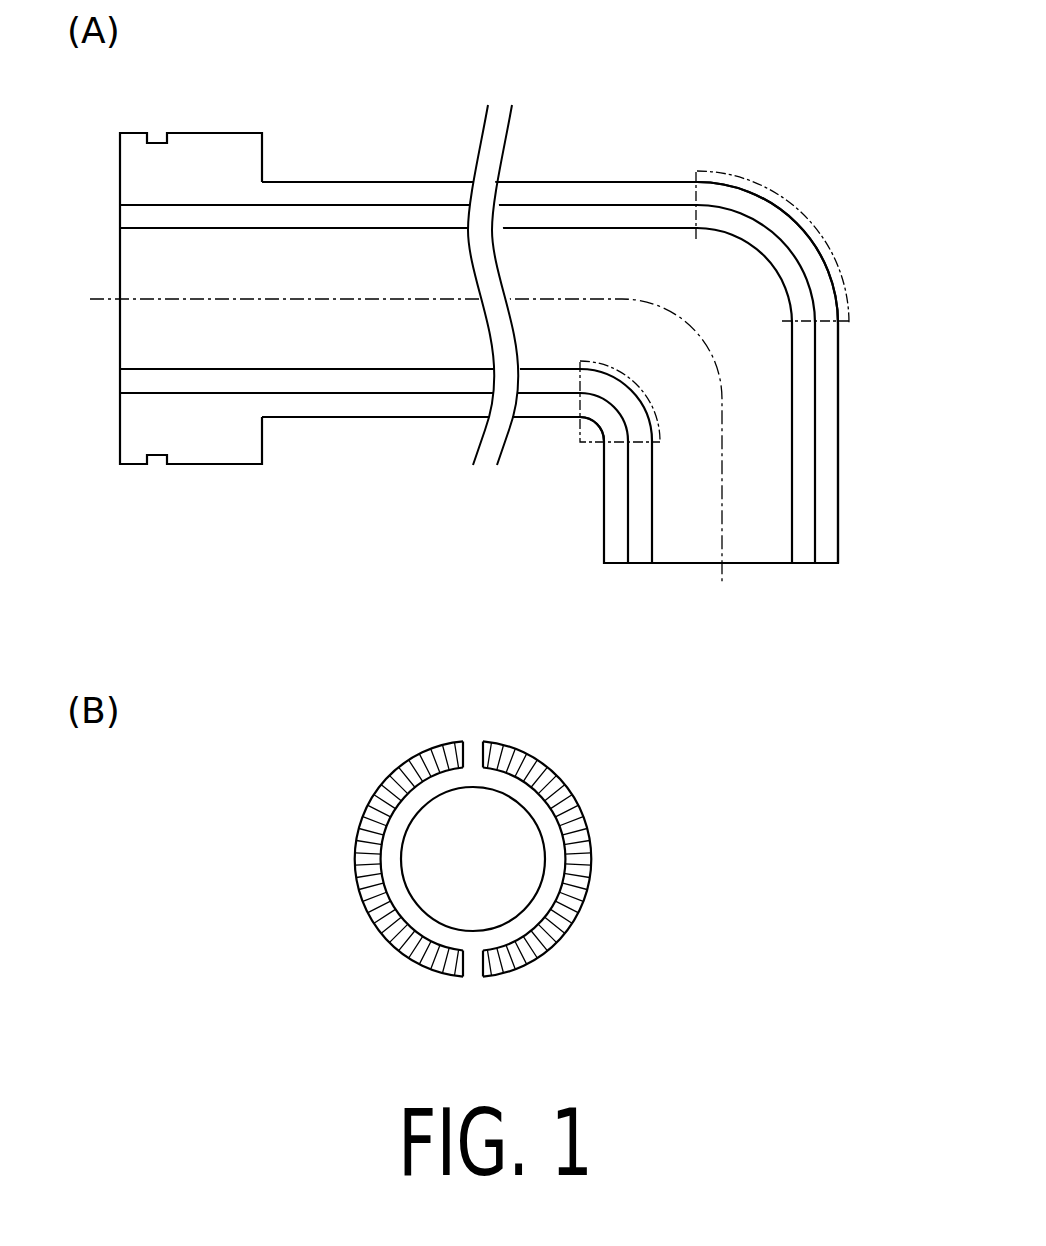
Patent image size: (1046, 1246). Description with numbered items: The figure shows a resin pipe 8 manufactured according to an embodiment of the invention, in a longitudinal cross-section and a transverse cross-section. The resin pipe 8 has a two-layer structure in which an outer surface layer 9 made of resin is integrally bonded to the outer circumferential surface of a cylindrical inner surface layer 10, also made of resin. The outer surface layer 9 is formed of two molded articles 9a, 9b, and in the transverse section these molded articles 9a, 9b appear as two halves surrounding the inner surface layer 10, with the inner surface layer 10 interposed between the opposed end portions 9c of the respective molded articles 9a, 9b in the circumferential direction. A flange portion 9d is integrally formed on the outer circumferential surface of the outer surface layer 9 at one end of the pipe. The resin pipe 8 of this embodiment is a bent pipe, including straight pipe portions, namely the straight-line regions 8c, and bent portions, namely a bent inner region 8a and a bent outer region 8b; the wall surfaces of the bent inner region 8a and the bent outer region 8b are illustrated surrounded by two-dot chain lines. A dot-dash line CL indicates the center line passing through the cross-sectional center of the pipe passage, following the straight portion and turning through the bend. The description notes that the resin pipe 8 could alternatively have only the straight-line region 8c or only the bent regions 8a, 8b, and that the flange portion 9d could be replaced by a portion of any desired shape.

The resin pipe 8 is at (575, 180).
The bent inner region 8a is at (590, 432).
The bent outer region 8b is at (786, 205).
The straight-line region 8c is at (385, 408).
The outer surface layer 9 is at (344, 190).
The molded article 9a is at (362, 838).
The molded article 9b is at (585, 838).
The opposed end portion 9c is at (470, 742).
The flange portion 9d is at (184, 145).
The inner surface layer 10 is at (400, 222).
The center line CL is at (417, 462).